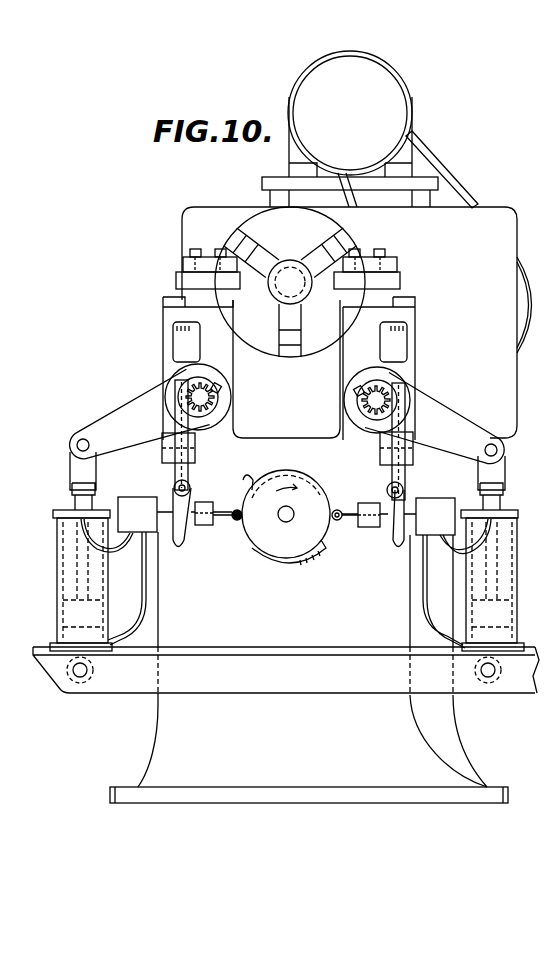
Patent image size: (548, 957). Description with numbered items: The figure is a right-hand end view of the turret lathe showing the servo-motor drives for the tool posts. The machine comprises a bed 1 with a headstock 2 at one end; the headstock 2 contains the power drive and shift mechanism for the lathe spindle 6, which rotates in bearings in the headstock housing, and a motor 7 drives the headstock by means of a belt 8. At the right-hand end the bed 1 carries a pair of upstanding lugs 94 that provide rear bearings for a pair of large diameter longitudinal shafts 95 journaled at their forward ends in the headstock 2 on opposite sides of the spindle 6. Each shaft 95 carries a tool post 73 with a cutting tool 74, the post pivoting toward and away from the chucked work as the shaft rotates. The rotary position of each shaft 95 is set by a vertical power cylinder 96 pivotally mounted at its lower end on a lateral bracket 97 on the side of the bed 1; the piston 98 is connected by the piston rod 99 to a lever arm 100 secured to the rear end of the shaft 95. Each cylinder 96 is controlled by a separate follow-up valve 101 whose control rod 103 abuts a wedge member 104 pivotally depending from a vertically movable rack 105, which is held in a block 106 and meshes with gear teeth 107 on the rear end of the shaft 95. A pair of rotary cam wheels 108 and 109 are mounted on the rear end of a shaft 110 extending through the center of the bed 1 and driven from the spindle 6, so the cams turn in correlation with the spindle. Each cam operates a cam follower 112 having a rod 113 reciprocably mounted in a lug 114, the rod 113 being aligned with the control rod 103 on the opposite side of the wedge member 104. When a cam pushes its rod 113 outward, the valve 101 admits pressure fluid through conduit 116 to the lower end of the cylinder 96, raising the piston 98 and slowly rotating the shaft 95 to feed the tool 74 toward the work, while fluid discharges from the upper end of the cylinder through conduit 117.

The bed 1 is at (165, 596).
The headstock 2 is at (484, 222).
The lathe spindle 6 is at (290, 282).
The motor 7 is at (411, 101).
The belt 8 is at (440, 167).
The tool post 73 is at (170, 297).
The cutting tool 74 is at (302, 232).
The upstanding lugs 94 is at (257, 422).
The longitudinal shafts 95 is at (194, 372).
The vertical power cylinder 96 is at (58, 570).
The lateral bracket 97 is at (154, 644).
The piston 98 is at (70, 618).
The piston rod 99 is at (78, 502).
The lever arm 100 is at (108, 416).
The follow-up valve 101 is at (136, 493).
The control rod 103 is at (182, 548).
The wedge member 104 is at (191, 540).
The rack 105 is at (175, 412).
The block 106 is at (165, 456).
The gear teeth 107 is at (214, 386).
The rotary cam wheel 108 is at (289, 522).
The rotary cam wheel 109 is at (314, 558).
The shaft 110 is at (291, 509).
The cam follower 112 is at (236, 509).
The rod 113 is at (230, 522).
The lug 114 is at (203, 500).
The conduit 116 is at (147, 586).
The conduit 117 is at (117, 552).